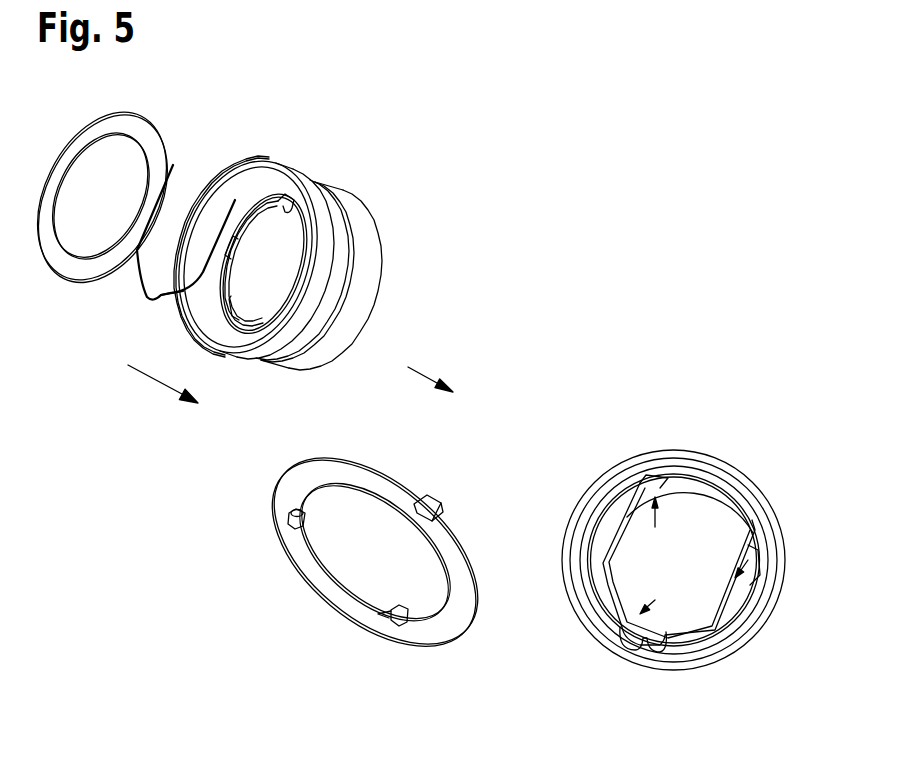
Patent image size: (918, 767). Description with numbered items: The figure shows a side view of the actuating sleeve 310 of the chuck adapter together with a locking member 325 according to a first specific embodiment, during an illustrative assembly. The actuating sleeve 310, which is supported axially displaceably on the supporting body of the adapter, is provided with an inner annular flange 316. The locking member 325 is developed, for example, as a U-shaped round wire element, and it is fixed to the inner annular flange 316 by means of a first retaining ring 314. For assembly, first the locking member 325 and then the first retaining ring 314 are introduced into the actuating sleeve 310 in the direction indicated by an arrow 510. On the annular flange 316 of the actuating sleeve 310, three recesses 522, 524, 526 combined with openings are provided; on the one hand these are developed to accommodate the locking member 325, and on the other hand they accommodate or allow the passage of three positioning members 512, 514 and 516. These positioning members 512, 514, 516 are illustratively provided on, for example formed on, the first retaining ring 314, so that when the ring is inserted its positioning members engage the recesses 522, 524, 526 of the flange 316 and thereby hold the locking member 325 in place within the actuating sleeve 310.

The actuating sleeve 310 is at (355, 220).
The first retaining ring 314 is at (135, 132).
The inner annular flange 316 is at (297, 200).
The locking member 325 is at (173, 167).
The arrow 510 is at (150, 378).
The positioning member 512 is at (427, 502).
The positioning member 514 is at (413, 617).
The positioning member 516 is at (290, 508).
The recess 522 is at (660, 595).
The recess 524 is at (727, 592).
The recess 526 is at (643, 487).